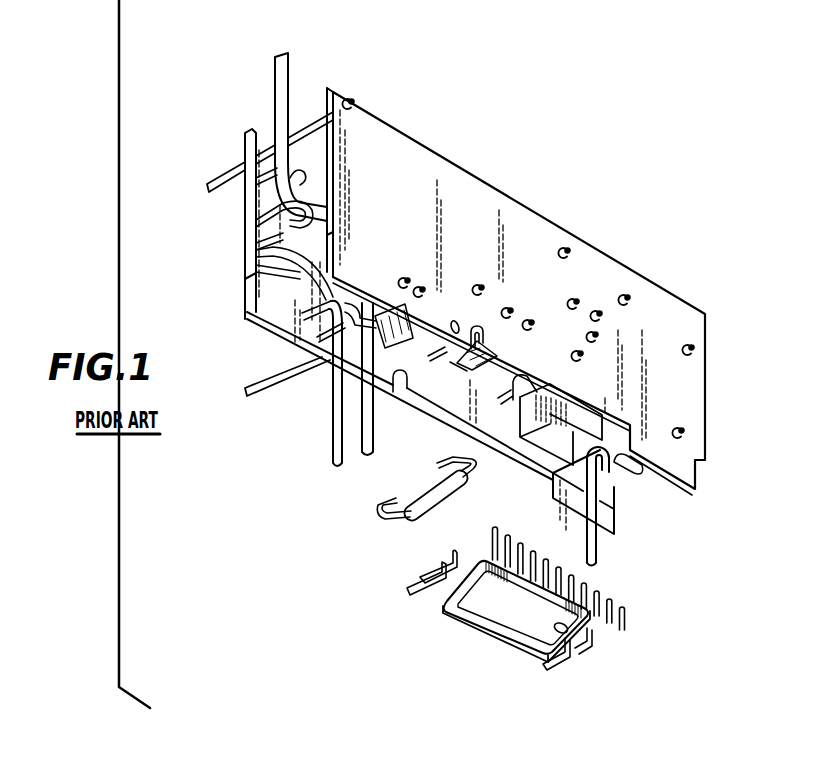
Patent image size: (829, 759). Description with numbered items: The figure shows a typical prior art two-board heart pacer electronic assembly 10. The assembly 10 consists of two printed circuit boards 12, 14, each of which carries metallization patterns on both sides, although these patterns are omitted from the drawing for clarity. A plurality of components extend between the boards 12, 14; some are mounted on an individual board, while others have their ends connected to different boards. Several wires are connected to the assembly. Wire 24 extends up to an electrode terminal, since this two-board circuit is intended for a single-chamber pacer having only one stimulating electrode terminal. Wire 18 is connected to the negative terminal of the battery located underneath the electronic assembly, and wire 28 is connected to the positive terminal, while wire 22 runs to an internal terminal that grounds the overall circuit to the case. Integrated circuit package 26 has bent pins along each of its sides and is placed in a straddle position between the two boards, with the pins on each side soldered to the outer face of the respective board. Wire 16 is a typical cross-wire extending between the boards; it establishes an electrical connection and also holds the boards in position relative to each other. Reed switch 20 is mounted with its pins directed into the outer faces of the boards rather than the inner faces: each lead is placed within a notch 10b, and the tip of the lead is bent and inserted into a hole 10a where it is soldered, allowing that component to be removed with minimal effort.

The assembly 10 is at (541, 178).
The hole 10a is at (451, 320).
The notch 10b is at (484, 338).
The printed circuit board 12 is at (409, 150).
The printed circuit board 14 is at (263, 290).
The cross-wire 16 is at (231, 167).
The wire 18 is at (332, 438).
The reed switch 20 is at (433, 490).
The wire 22 is at (373, 444).
The wire 24 is at (290, 88).
The integrated circuit package 26 is at (640, 625).
The wire 28 is at (602, 545).